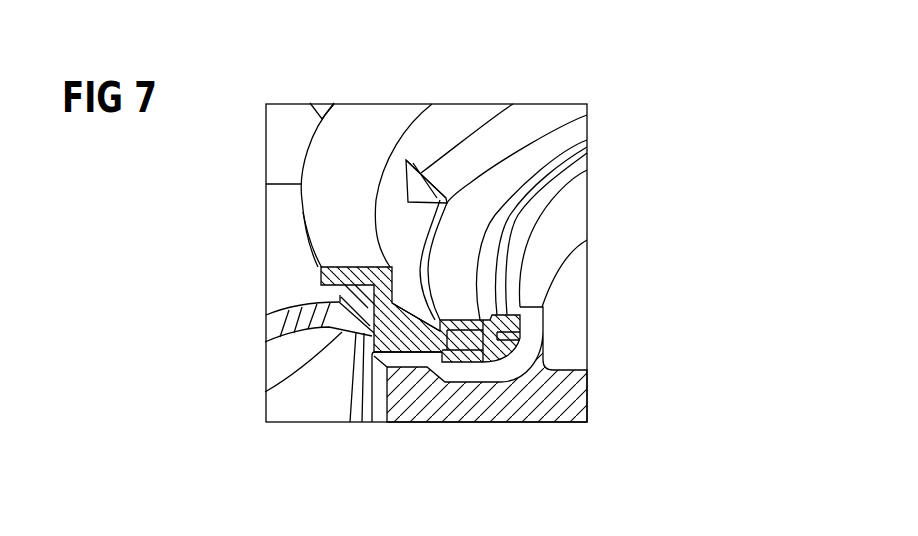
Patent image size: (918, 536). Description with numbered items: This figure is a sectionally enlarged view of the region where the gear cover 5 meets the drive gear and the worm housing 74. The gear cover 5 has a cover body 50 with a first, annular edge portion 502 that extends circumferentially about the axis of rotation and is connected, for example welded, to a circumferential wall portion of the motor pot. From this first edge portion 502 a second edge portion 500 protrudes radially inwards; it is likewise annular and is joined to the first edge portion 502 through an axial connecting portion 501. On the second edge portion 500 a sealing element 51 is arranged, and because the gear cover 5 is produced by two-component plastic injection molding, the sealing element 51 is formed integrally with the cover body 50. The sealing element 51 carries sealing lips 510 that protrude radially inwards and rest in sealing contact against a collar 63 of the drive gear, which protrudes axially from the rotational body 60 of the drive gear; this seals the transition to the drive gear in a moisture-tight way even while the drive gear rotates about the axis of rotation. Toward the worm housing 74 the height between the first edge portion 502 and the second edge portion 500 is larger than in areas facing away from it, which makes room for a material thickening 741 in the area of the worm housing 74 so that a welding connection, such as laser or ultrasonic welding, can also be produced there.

The gear cover 5 is at (499, 82).
The cover body 50 is at (452, 82).
The sealing element 51 is at (559, 107).
The rotational body 60 is at (572, 399).
The collar 63 is at (533, 346).
The worm housing 74 is at (283, 324).
The material thickening 741 is at (362, 296).
The second edge portion 500 is at (443, 382).
The axial connecting portion 501 is at (374, 335).
The first edge portion 502 is at (317, 270).
The sealing lips 510 is at (500, 340).